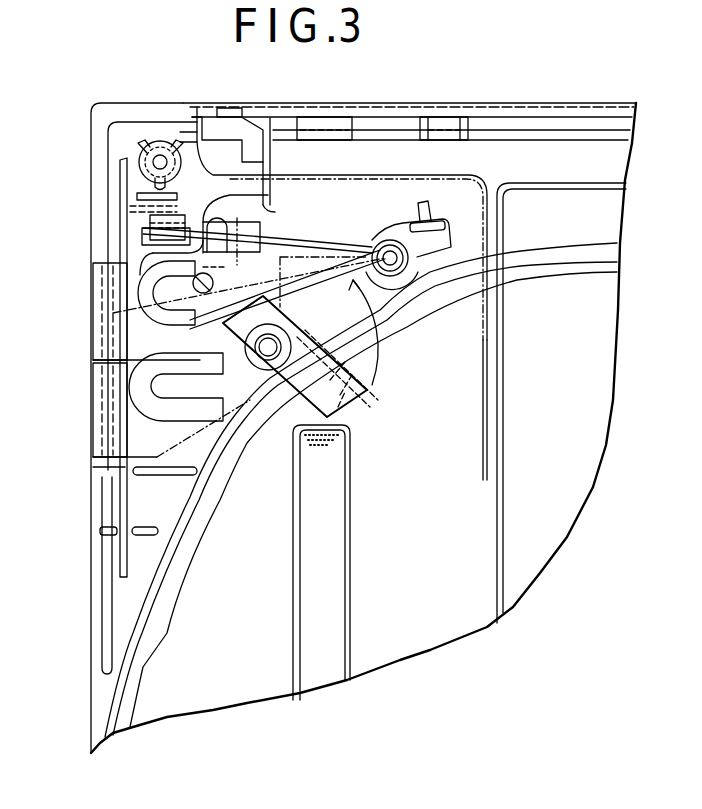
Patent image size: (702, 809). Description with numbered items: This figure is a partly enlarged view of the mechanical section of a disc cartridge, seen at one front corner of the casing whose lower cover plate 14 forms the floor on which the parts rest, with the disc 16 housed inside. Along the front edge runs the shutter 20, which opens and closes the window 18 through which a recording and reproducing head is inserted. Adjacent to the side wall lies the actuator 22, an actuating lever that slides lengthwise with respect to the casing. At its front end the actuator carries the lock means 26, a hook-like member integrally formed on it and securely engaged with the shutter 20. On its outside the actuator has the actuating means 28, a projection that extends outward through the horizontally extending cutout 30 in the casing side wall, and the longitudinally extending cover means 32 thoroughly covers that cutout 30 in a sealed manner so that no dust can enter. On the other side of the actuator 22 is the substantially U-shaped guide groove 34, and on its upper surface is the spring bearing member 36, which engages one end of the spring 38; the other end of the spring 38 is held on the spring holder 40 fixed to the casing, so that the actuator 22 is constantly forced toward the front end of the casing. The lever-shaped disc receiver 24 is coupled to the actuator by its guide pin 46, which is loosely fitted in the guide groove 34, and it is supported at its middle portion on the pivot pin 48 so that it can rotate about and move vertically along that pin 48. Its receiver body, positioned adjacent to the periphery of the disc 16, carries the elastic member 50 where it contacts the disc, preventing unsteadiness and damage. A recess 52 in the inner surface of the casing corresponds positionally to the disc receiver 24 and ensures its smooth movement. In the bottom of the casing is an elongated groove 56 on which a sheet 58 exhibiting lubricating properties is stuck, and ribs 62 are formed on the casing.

The lower cover plate 14 is at (91, 624).
The disc 16 is at (132, 707).
The window 18 is at (505, 395).
The shutter 20 is at (450, 108).
The actuator 22 is at (214, 138).
The disc receiver 24 is at (358, 401).
The lock means 26 is at (258, 115).
The actuating means 28 is at (98, 300).
The cutout 30 is at (120, 420).
The cover means 32 is at (125, 170).
The guide groove 34 is at (140, 262).
The spring bearing member 36 is at (150, 230).
The spring 38 is at (330, 245).
The spring holder 40 is at (387, 246).
The guide pin 46 is at (213, 283).
The pivot pin 48 is at (290, 320).
The elastic member 50 is at (352, 420).
The recess 52 is at (385, 374).
The elongated groove 56 is at (293, 628).
The sheet 58 is at (293, 543).
The rib 62 is at (72, 557).